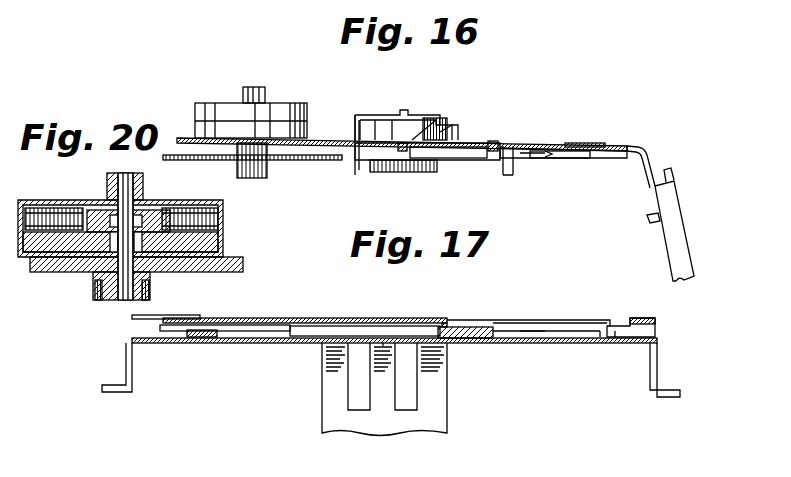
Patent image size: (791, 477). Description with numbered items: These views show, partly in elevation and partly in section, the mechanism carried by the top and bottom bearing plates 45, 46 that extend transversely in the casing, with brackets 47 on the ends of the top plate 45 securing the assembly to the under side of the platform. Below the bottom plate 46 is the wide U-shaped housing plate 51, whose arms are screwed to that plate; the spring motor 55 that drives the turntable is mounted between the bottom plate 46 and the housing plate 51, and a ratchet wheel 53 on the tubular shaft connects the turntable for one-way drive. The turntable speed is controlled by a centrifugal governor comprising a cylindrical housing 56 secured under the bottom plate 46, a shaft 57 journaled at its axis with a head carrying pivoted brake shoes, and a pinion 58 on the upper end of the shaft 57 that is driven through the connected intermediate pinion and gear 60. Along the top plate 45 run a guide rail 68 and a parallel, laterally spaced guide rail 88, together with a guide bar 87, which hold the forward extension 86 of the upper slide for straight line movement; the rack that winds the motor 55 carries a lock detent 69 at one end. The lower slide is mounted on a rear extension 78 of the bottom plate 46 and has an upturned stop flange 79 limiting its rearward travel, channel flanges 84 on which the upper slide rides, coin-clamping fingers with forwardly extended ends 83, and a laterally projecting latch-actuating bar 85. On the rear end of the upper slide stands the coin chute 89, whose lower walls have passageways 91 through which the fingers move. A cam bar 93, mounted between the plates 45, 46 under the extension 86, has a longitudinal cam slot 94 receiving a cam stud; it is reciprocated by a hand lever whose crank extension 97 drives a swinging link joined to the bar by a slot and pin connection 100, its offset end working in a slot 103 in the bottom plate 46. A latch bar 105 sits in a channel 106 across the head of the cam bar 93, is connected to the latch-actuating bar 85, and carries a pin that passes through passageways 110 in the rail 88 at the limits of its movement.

In FIG. 16, the top bearing plate 45 is at (355, 168).
In FIG. 17, the top bearing plate 45 is at (610, 338).
In FIG. 16, the bottom bearing plate 46 is at (350, 140).
In FIG. 20, the bottom bearing plate 46 is at (243, 266).
In FIG. 17, the bottom bearing plate 46 is at (655, 337).
In FIG. 17, the brackets 47 is at (132, 373).
In FIG. 16, the housing plate 51 is at (428, 120).
In FIG. 16, the ratchet wheel 53 is at (432, 172).
In FIG. 16, the spring motor 55 is at (405, 128).
In FIG. 16, the cylindrical housing 56 is at (288, 103).
In FIG. 20, the cylindrical housing 56 is at (223, 211).
In FIG. 20, the shaft 57 is at (118, 285).
In FIG. 16, the pinion 58 is at (268, 165).
In FIG. 20, the pinion 58 is at (150, 287).
In FIG. 16, the intermediate pinion and gear 60 is at (232, 162).
In FIG. 16, the guide rail 68 is at (450, 124).
In FIG. 16, the lock detent 69 is at (392, 158).
In FIG. 16, the rear extension 78 is at (588, 143).
In FIG. 16, the stop flange 79 is at (634, 146).
In FIG. 16, the ends of coin-clamping fingers 83 is at (652, 221).
In FIG. 16, the channel flanges 84 is at (598, 158).
In FIG. 16, the latch-actuating bar 85 is at (498, 160).
In FIG. 17, the forward extension 86 is at (388, 345).
In FIG. 17, the guide bar 87 is at (330, 336).
In FIG. 16, the guide rail 88 is at (508, 141).
In FIG. 16, the coin chute 89 is at (672, 230).
In FIG. 17, the coin chute 89 is at (435, 404).
In FIG. 17, the passageways 91 is at (355, 383).
In FIG. 16, the cam bar 93 is at (460, 158).
In FIG. 17, the cam bar 93 is at (505, 322).
In FIG. 17, the cam slot 94 is at (270, 332).
In FIG. 17, the crank extension 97 is at (210, 338).
In FIG. 17, the slot and pin connection 100 is at (188, 322).
In FIG. 17, the slot 103 is at (288, 318).
In FIG. 17, the latch bar 105 is at (490, 338).
In FIG. 17, the channel 106 is at (462, 327).
In FIG. 17, the passageways 110 is at (490, 320).